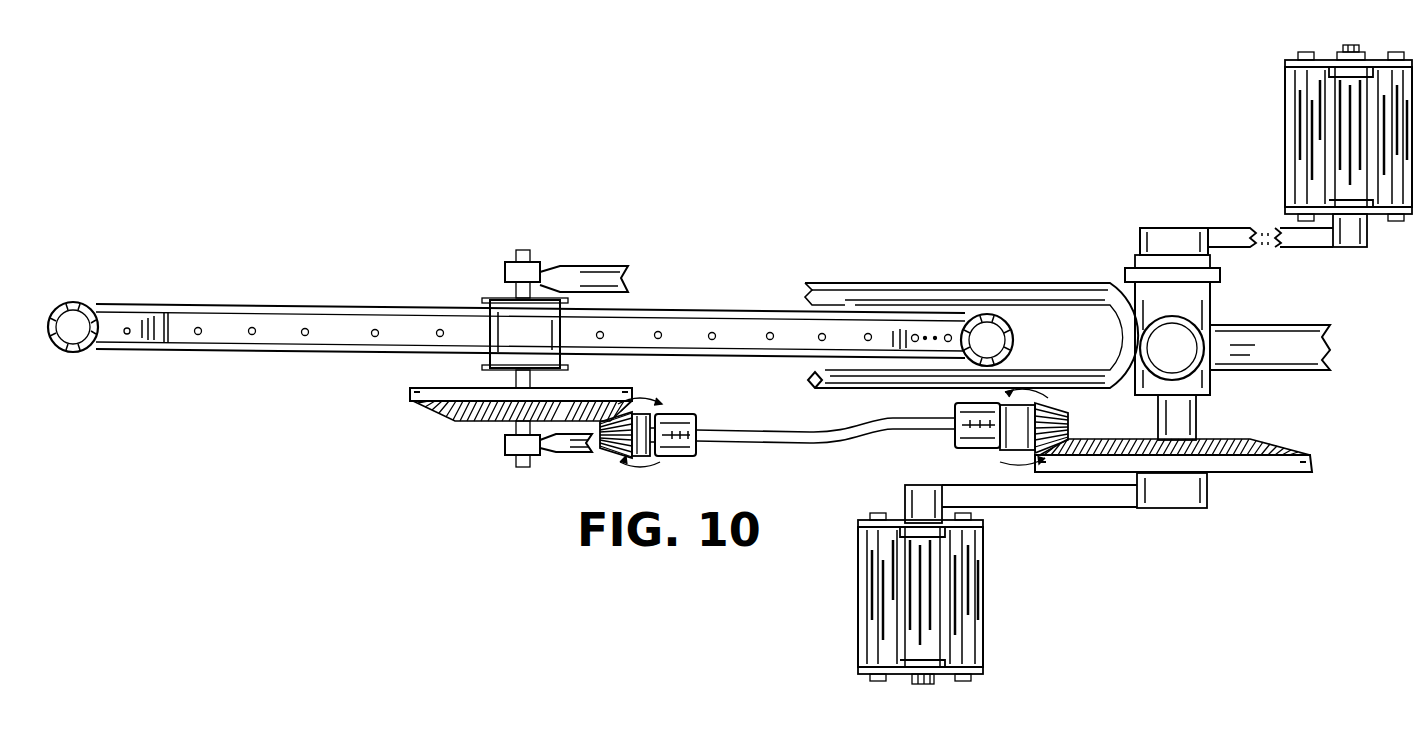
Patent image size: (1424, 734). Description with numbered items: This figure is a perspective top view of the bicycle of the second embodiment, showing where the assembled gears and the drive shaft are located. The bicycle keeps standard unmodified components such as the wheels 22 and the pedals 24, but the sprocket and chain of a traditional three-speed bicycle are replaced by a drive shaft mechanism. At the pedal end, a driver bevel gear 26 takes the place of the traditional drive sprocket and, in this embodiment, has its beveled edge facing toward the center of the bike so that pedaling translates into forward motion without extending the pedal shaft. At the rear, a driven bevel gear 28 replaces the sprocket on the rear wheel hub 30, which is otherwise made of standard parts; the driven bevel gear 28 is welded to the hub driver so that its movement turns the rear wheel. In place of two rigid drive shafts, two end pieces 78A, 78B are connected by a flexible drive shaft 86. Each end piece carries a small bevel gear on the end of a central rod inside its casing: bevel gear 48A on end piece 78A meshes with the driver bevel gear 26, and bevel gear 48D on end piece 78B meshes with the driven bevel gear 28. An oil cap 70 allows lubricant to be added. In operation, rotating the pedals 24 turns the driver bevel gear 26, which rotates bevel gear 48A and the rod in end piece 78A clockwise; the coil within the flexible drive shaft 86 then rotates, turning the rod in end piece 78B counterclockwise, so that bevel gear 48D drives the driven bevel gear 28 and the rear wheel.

The wheels 22 is at (300, 318).
The pedals 24 is at (1285, 182).
The driver bevel gear 26 is at (1245, 440).
The driven bevel gear 28 is at (415, 402).
The rear wheel hub 30 is at (490, 333).
The small bevel gear 48A is at (1066, 414).
The small bevel gear 48D is at (612, 452).
The oil cap 70 is at (640, 456).
The end piece 78A is at (1010, 405).
The end piece 78B is at (641, 414).
The flexible drive shaft 86 is at (818, 444).